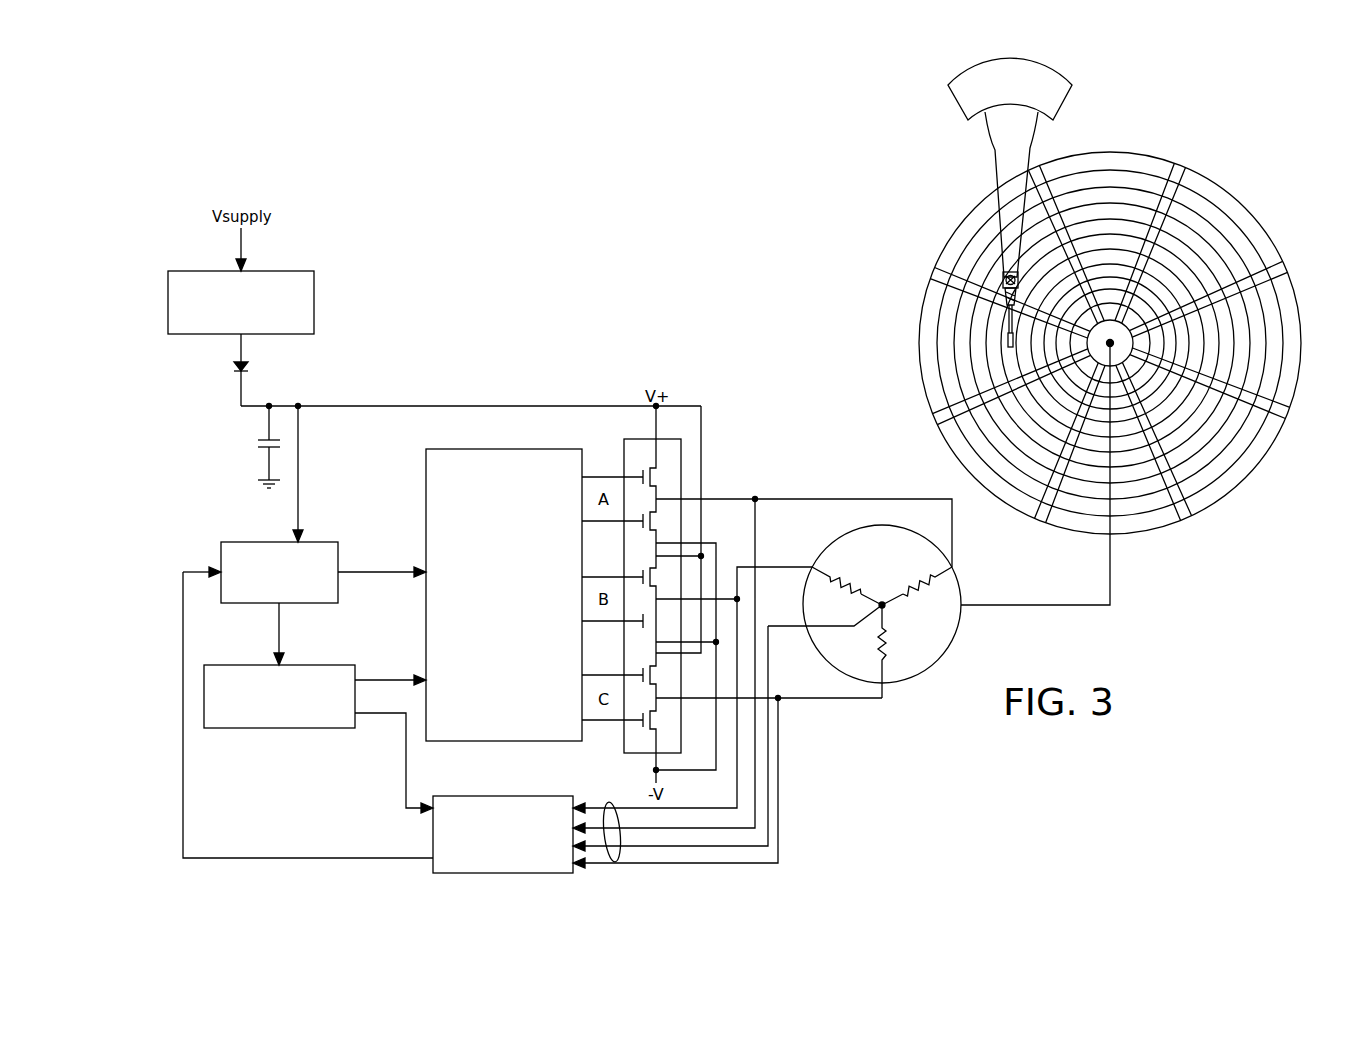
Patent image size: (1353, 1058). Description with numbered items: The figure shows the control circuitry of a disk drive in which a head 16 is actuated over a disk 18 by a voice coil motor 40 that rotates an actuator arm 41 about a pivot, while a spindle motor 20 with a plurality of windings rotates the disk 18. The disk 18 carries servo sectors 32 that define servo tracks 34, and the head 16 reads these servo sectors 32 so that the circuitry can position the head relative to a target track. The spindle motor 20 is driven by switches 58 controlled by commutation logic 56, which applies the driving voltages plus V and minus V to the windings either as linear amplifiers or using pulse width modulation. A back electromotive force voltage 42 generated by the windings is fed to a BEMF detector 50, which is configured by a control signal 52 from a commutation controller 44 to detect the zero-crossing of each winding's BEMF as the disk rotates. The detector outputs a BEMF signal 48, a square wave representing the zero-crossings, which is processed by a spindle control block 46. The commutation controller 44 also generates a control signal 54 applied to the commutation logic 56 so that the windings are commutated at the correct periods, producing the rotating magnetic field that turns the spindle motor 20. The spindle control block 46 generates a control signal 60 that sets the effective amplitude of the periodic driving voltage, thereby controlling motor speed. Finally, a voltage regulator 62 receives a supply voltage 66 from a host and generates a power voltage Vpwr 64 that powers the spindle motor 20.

The head 16 is at (1026, 345).
The disk 18 is at (1108, 339).
The spindle motor 20 is at (959, 627).
The servo sectors 32 is at (1040, 172).
The servo tracks 34 is at (1108, 180).
The voice coil motor 40 is at (959, 107).
The actuator arm 41 is at (996, 172).
The back electromotive force voltage 42 is at (613, 862).
The commutation controller 44 is at (279, 728).
The spindle control block 46 is at (320, 603).
The BEMF signal 48 is at (313, 858).
The BEMF detector 50 is at (503, 796).
The control signal 52 is at (406, 755).
The control signal 54 is at (383, 679).
The commutation logic 56 is at (503, 449).
The switches 58 is at (640, 438).
The control signal 60 is at (375, 571).
The voltage regulator 62 is at (314, 301).
The power voltage Vpwr 64 is at (318, 406).
The supply voltage 66 is at (243, 243).